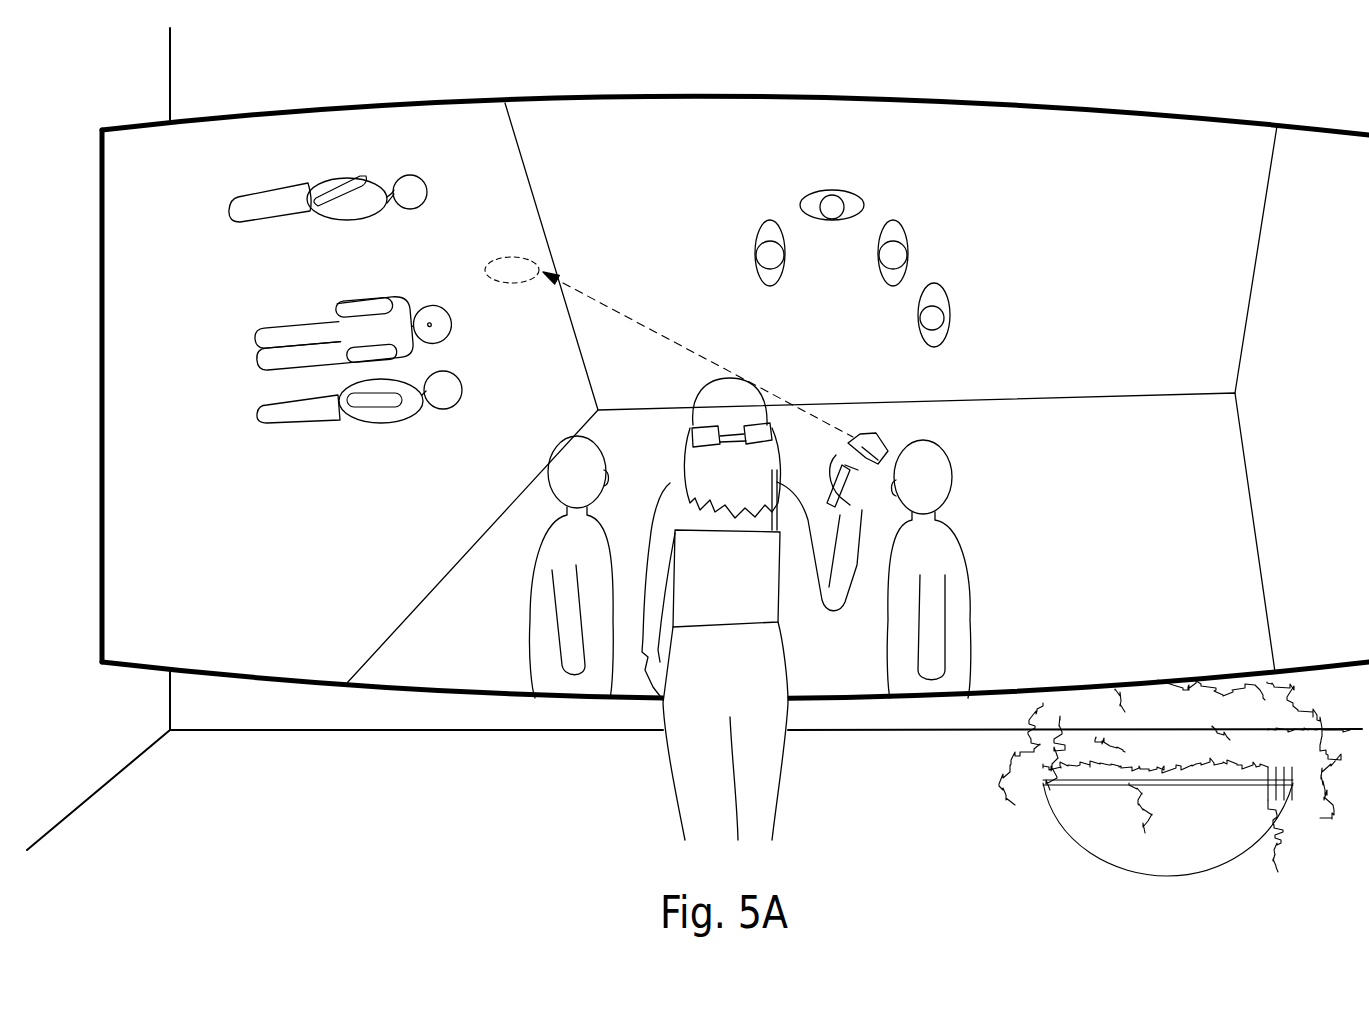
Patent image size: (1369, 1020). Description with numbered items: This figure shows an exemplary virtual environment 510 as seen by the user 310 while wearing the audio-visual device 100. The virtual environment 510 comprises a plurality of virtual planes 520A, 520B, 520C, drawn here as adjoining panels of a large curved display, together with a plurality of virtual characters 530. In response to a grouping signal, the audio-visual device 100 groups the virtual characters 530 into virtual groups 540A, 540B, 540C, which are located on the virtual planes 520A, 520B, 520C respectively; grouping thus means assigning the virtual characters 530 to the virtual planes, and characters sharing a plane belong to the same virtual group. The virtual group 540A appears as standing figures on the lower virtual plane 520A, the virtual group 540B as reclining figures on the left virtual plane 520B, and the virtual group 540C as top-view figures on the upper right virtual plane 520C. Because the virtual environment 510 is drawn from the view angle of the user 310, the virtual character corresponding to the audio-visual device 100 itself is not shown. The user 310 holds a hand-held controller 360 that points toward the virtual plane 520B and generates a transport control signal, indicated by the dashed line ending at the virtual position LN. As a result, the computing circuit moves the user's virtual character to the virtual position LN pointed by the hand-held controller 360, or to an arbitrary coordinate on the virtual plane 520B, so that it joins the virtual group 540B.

The virtual environment 510 is at (328, 108).
The virtual plane 520A is at (1190, 466).
The virtual plane 520B is at (513, 215).
The virtual plane 520C is at (1133, 181).
The virtual group 540A is at (480, 590).
The virtual group 540B is at (437, 150).
The virtual group 540C is at (890, 172).
The virtual characters 530 is at (262, 363).
The virtual position LN is at (516, 285).
The audio-visual device 100 is at (771, 437).
The hand-held controller 360 is at (870, 442).
The user 310 is at (692, 742).